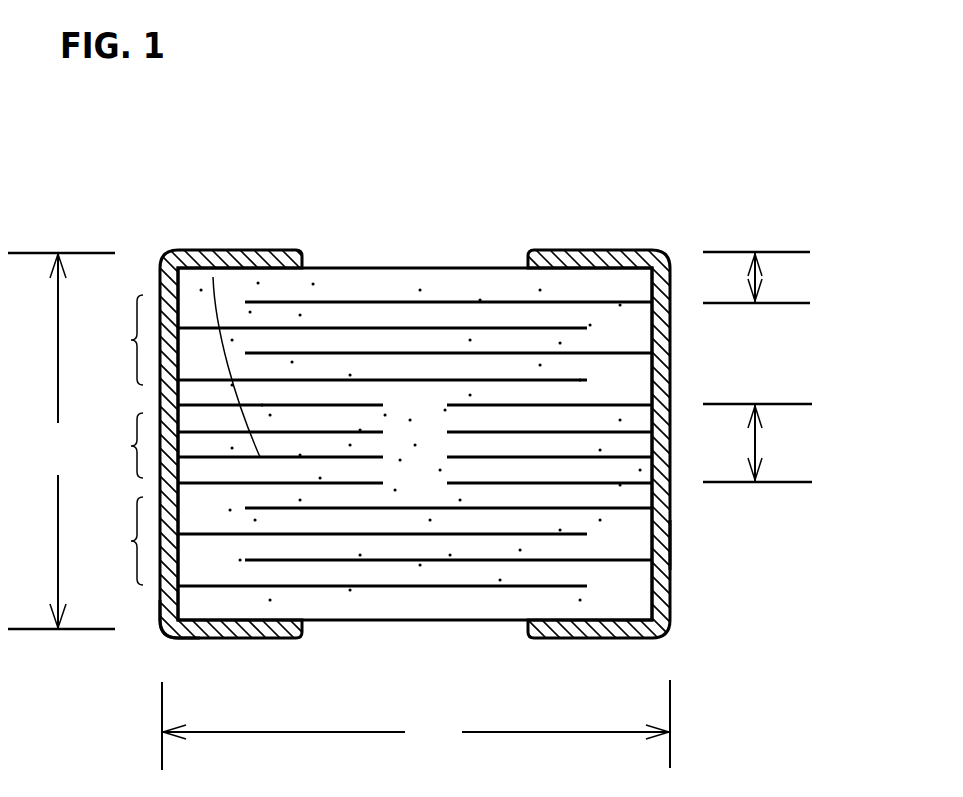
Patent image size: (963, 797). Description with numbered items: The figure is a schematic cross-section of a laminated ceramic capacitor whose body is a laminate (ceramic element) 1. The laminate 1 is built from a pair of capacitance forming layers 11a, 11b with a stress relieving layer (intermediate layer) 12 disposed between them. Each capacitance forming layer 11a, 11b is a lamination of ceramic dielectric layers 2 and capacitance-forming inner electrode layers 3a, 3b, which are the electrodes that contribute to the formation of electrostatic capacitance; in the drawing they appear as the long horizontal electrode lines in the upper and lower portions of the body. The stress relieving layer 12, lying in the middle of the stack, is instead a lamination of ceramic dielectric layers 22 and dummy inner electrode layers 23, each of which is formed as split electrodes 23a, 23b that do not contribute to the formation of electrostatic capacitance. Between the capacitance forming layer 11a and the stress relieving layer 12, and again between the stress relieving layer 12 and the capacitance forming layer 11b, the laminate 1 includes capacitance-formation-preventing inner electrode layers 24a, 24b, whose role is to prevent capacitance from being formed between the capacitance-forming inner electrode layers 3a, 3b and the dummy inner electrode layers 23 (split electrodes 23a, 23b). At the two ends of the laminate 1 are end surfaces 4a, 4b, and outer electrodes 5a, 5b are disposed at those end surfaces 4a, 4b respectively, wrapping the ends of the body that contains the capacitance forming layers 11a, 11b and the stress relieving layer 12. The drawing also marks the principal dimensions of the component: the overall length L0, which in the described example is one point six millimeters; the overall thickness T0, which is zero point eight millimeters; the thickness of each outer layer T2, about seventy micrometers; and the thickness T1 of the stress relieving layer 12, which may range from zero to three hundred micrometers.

The laminate (ceramic element) 1 is at (465, 262).
The ceramic dielectric layers 2 is at (408, 288).
The capacitance-forming inner electrode layer 3a is at (373, 382).
The capacitance-forming inner electrode layer 3b is at (492, 353).
The end surface 4a is at (160, 282).
The end surface 4b is at (670, 283).
The outer electrode 5a is at (160, 613).
The outer electrode 5b is at (672, 545).
The capacitance forming layer 11a is at (105, 340).
The capacitance forming layer 11b is at (104, 541).
The stress relieving layer (intermediate layer) 12 is at (114, 445).
The ceramic dielectric layers 22 is at (293, 440).
The dummy inner electrode layers 23 is at (401, 279).
The split electrode 23a is at (212, 432).
The split electrode 23b is at (562, 457).
The capacitance-formation-preventing inner electrode layer 24a is at (327, 405).
The capacitance-formation-preventing inner electrode layer 24b is at (615, 482).
The thickness T0 is at (61, 441).
The thickness of the stress relieving layer T1 is at (757, 442).
The thickness of each outer layer T2 is at (770, 278).
The length L0 is at (416, 725).